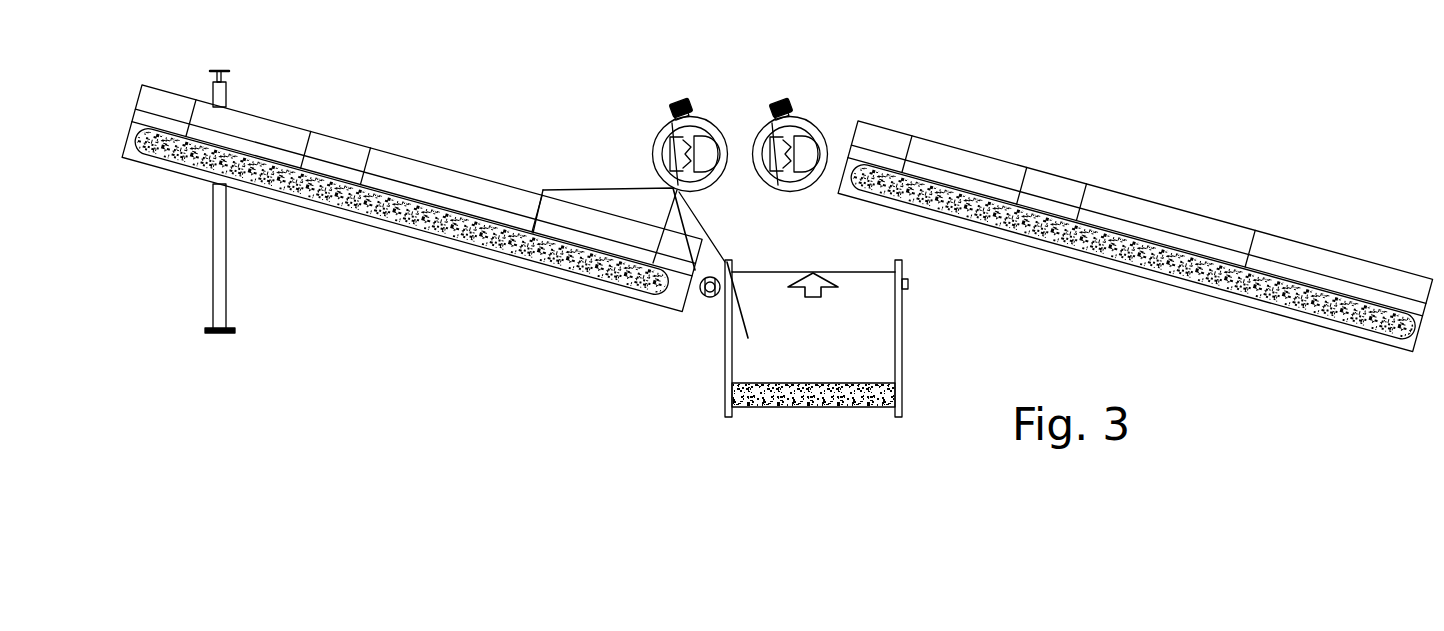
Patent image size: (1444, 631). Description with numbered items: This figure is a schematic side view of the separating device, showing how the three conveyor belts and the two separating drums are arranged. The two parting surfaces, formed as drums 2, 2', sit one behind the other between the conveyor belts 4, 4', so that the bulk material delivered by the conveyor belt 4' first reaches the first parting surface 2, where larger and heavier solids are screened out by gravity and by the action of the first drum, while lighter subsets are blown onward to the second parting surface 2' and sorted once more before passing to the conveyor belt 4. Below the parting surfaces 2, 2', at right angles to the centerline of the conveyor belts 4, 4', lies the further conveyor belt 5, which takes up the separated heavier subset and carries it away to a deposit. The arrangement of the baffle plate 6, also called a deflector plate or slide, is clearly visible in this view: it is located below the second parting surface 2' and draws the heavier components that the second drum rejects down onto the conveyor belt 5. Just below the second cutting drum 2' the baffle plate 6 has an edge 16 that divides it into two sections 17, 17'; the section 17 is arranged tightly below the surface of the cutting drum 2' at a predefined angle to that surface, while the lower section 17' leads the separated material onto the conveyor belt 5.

The first parting surface 2 is at (811, 103).
The second parting surface 2' is at (709, 103).
The conveyor belt 4 is at (1135, 240).
The conveyor belt 4' is at (412, 202).
The conveyor belt 5 is at (832, 358).
The baffle plate 6 is at (727, 249).
The edge 16 is at (700, 192).
The section 17 is at (689, 226).
The lower section 17' is at (684, 326).